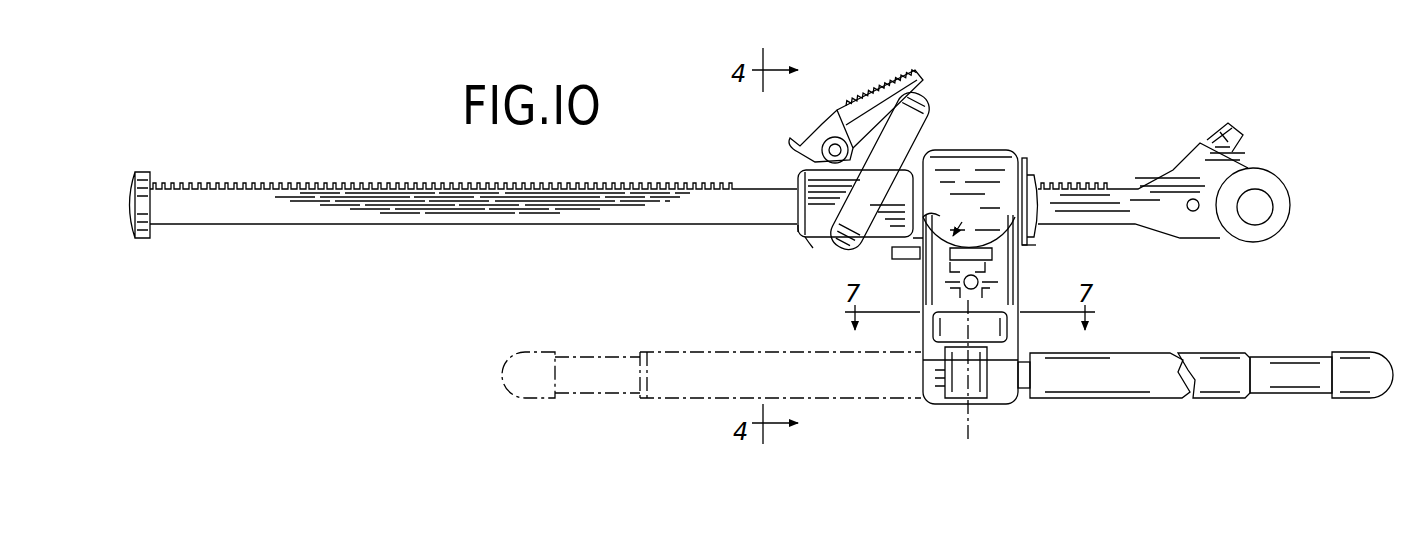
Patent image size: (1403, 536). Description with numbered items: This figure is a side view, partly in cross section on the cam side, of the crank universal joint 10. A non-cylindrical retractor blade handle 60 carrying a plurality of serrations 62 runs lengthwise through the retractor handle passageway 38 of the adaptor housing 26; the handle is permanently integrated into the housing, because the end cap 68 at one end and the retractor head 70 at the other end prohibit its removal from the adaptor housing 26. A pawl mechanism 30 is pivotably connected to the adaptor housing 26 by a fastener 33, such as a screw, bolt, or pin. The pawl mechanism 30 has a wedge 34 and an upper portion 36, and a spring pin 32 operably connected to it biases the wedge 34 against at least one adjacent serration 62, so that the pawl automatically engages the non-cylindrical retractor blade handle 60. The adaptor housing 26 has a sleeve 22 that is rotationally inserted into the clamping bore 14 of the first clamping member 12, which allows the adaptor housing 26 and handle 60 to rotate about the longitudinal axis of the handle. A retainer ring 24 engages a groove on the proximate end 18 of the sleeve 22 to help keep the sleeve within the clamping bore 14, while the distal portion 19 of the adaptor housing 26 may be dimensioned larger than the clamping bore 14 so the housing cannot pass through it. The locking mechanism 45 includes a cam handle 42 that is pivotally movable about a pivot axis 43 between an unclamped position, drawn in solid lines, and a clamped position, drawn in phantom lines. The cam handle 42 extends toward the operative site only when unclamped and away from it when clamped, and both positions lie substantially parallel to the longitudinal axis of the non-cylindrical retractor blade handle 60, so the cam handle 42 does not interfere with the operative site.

The crank universal joint 10 is at (950, 128).
The first clamping member 12 is at (978, 148).
The clamping bore 14 is at (1002, 160).
The proximate end 18 is at (1030, 165).
The distal portion 19 is at (790, 236).
The sleeve 22 is at (1040, 182).
The retainer ring 24 is at (1031, 248).
The adaptor housing 26 is at (812, 242).
The pawl mechanism 30 is at (820, 118).
The spring pin 32 is at (867, 100).
The fastener 33 is at (822, 148).
The wedge 34 is at (782, 184).
The upper portion 36 is at (910, 75).
The retractor handle passageway 38 is at (887, 260).
The cam handle 42 is at (1223, 403).
The pivot axis 43 is at (977, 410).
The locking mechanism 45 is at (1025, 344).
The non-cylindrical retractor blade handle 60 is at (515, 207).
The serrations 62 is at (520, 184).
The end cap 68 is at (149, 170).
The retractor head 70 is at (1250, 150).